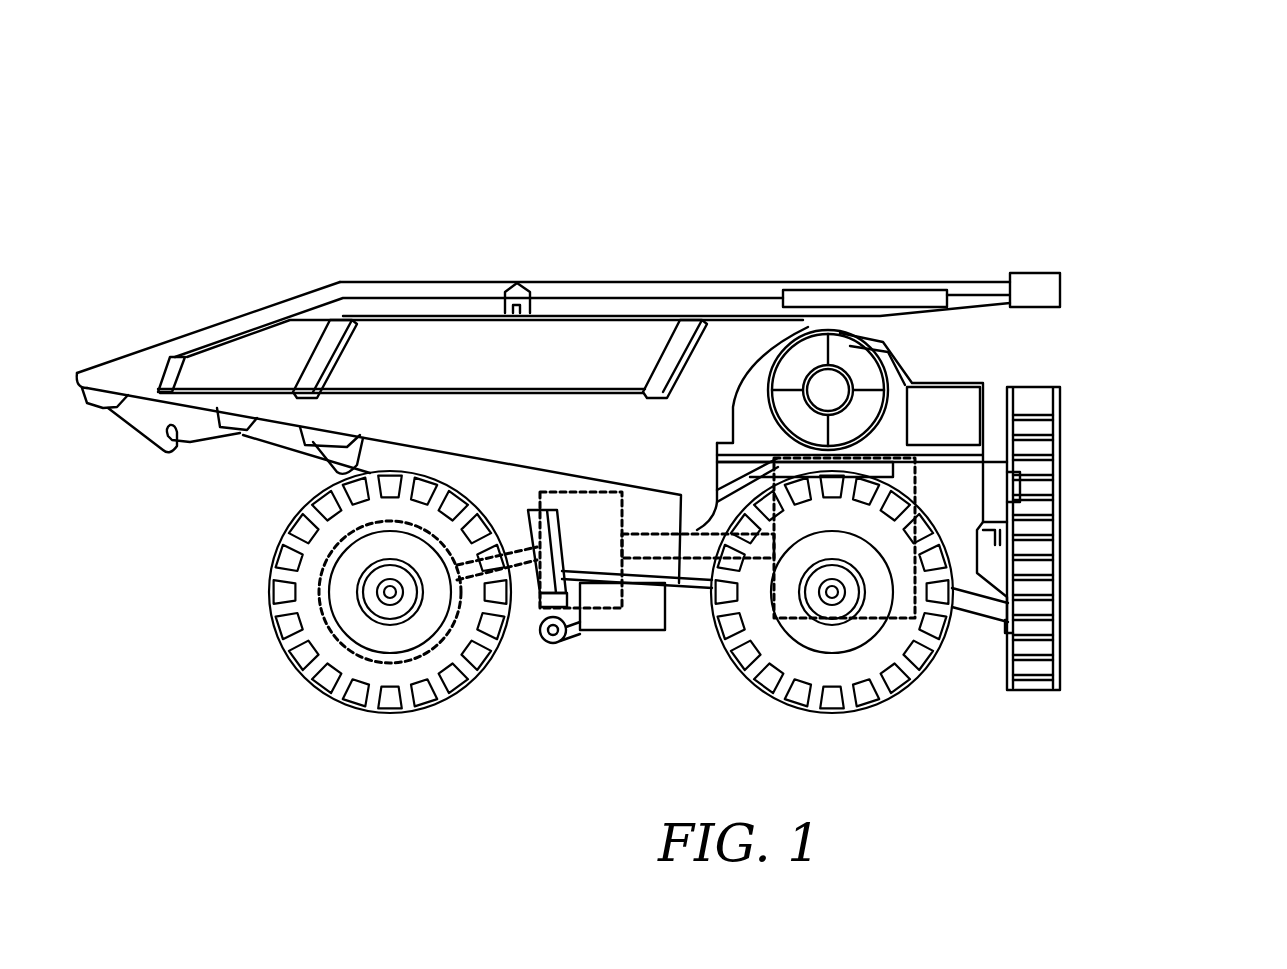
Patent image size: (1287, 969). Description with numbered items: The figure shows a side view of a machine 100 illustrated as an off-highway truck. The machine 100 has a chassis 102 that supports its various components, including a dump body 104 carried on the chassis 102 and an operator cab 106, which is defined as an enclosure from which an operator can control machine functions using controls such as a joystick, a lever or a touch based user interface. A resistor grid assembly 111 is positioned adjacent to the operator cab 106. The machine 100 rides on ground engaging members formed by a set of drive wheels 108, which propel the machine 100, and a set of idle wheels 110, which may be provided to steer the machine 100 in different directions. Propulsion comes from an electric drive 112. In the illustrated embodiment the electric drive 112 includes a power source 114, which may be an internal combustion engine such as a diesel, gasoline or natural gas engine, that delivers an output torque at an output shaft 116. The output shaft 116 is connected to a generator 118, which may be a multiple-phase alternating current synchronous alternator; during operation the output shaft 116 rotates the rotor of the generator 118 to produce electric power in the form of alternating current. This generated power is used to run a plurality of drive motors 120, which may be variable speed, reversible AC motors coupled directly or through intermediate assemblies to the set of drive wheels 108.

The machine 100 is at (1158, 134).
The chassis 102 is at (640, 623).
The dump body 104 is at (587, 282).
The operator cab 106 is at (983, 403).
The set of drive wheels 108 is at (477, 680).
The set of idle wheels 110 is at (758, 693).
The resistor grid assembly 111 is at (888, 372).
The electric drive 112 is at (693, 580).
The power source 114 is at (893, 625).
The output shaft 116 is at (698, 533).
The generator 118 is at (580, 492).
The drive motors 120 is at (323, 590).